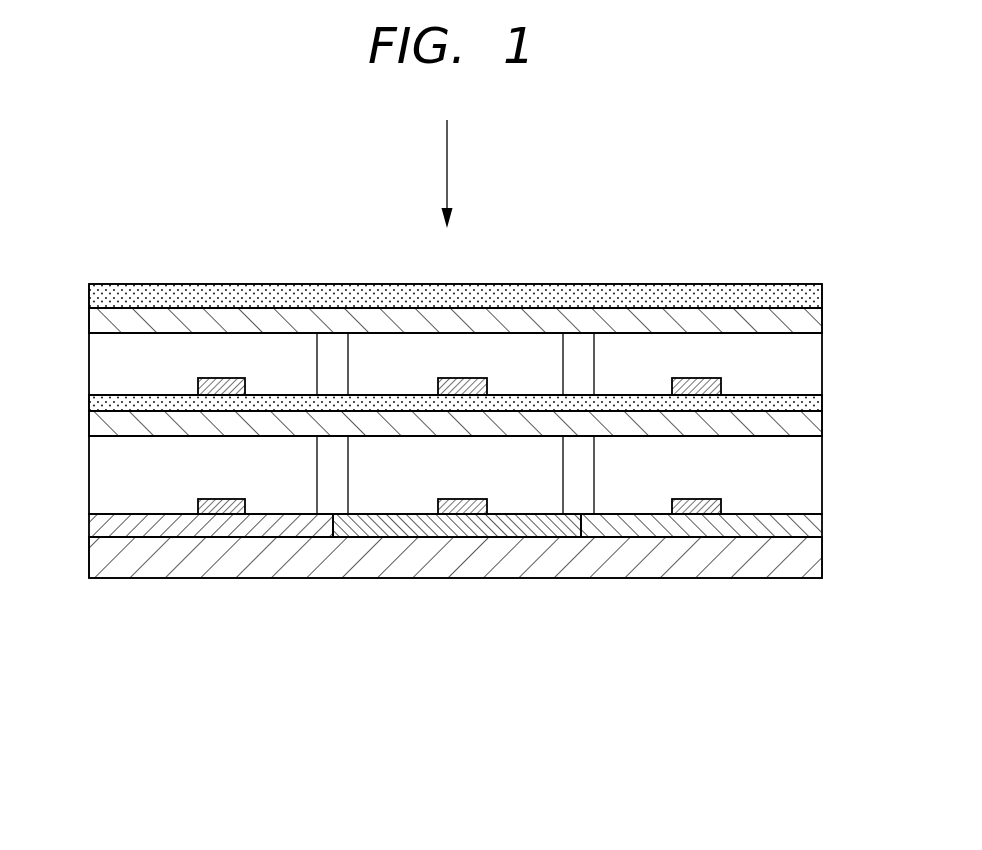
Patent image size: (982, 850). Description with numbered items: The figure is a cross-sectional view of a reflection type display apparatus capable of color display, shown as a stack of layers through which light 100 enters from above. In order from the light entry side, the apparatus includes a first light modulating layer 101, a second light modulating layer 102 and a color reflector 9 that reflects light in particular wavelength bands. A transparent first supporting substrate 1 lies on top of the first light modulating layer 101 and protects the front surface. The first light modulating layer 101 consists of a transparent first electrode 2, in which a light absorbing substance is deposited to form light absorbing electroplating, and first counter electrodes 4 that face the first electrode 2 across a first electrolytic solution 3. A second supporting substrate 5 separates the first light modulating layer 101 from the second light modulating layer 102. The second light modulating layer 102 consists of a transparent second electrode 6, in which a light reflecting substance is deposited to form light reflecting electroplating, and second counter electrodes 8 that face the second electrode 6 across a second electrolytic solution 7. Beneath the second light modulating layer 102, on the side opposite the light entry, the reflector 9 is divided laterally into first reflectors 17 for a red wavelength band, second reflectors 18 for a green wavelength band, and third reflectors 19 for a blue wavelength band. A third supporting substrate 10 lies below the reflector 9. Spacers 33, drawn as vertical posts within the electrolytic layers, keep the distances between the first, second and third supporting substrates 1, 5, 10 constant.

The light 100 is at (448, 165).
The first supporting substrate 1 is at (91, 288).
The first electrode 2 is at (91, 319).
The first electrolytic solution 3 is at (91, 360).
The first counter electrodes 4 is at (247, 380).
The second supporting substrate 5 is at (91, 400).
The second electrode 6 is at (91, 432).
The second electrolytic solution 7 is at (91, 483).
The second counter electrodes 8 is at (247, 500).
The color reflector 9 is at (455, 614).
The first reflectors 17 is at (246, 515).
The second reflectors 18 is at (443, 537).
The third reflectors 19 is at (687, 589).
The third supporting substrate 10 is at (91, 554).
The spacers 33 is at (344, 368).
The first light modulating layer 101 is at (842, 305).
The second light modulating layer 102 is at (842, 410).